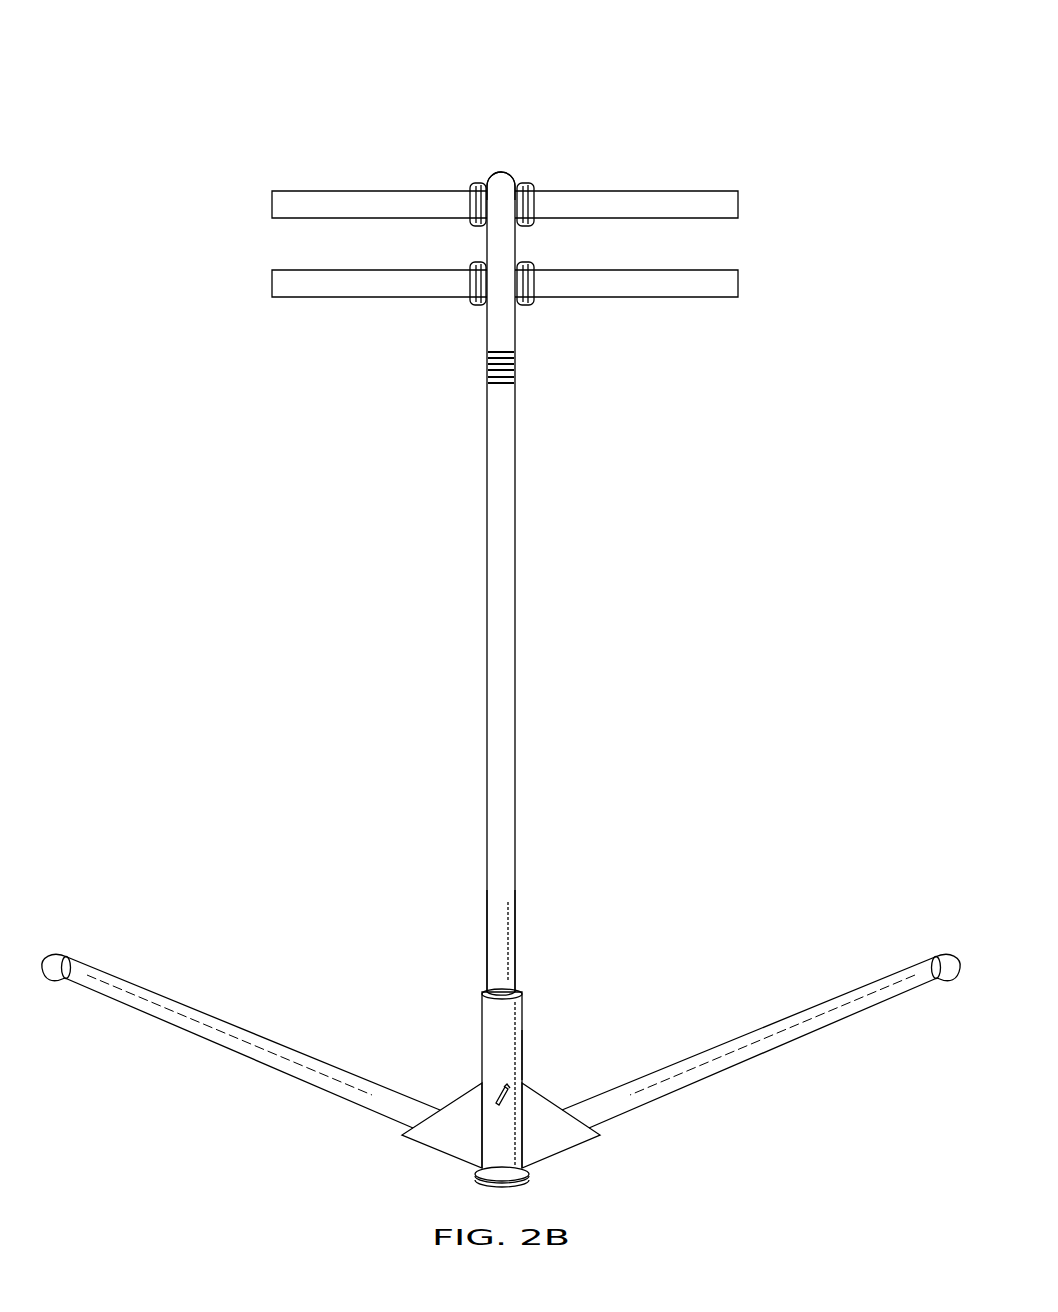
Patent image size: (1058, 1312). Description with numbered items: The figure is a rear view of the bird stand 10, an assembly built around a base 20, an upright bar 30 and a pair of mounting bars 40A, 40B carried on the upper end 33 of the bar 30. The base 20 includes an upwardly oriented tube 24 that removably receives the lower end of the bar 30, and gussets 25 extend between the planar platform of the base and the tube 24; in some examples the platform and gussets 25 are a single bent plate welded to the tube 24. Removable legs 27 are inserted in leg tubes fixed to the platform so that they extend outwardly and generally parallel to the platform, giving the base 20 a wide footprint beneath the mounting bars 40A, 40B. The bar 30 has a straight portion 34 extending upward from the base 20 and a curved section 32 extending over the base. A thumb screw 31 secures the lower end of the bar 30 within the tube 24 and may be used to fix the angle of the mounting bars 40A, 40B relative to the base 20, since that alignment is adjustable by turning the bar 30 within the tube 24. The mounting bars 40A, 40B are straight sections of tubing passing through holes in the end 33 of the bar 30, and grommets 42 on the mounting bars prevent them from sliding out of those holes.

The bird stand 10 is at (174, 88).
The base 20 is at (470, 1020).
The upwardly oriented tube 24 is at (523, 1050).
The gussets 25 is at (432, 1138).
The removable legs 27 is at (229, 1022).
The bar 30 is at (474, 929).
The thumb screw 31 is at (509, 1094).
The curved section 32 is at (509, 377).
The end 33 is at (502, 175).
The straight portion 34 is at (508, 789).
The mounting bar 40A is at (275, 200).
The mounting bar 40B is at (275, 283).
The grommets 42 is at (530, 187).